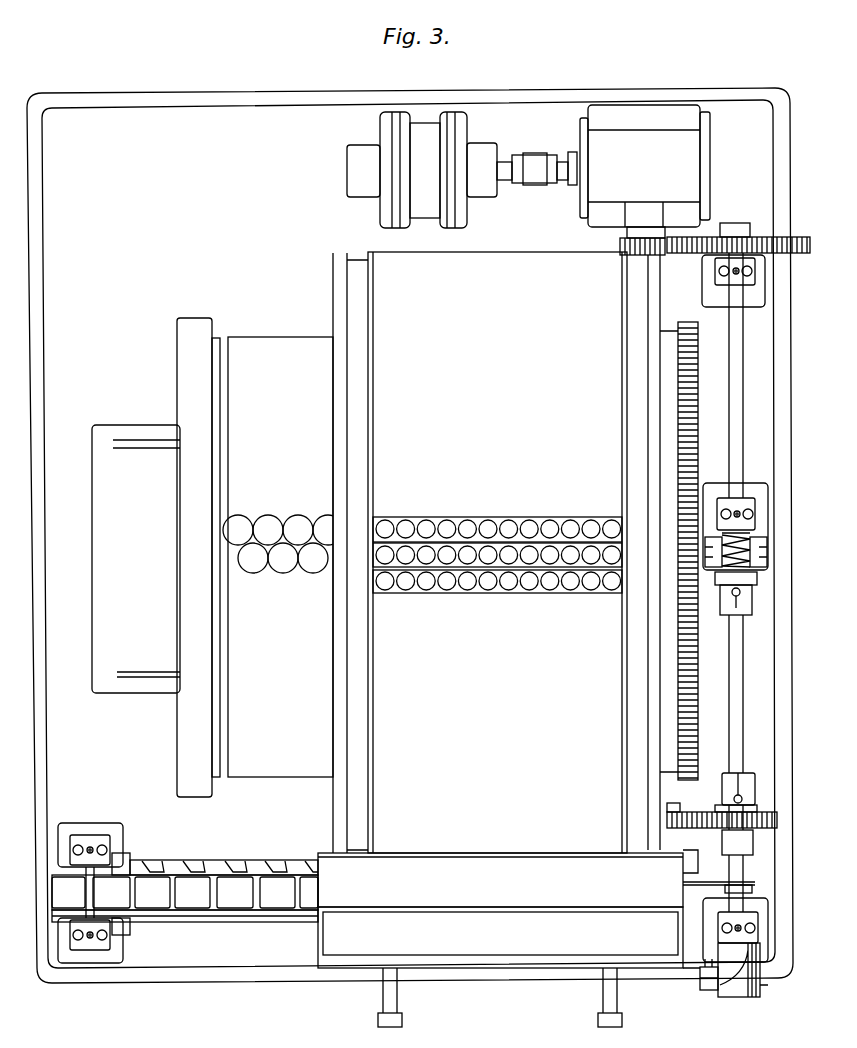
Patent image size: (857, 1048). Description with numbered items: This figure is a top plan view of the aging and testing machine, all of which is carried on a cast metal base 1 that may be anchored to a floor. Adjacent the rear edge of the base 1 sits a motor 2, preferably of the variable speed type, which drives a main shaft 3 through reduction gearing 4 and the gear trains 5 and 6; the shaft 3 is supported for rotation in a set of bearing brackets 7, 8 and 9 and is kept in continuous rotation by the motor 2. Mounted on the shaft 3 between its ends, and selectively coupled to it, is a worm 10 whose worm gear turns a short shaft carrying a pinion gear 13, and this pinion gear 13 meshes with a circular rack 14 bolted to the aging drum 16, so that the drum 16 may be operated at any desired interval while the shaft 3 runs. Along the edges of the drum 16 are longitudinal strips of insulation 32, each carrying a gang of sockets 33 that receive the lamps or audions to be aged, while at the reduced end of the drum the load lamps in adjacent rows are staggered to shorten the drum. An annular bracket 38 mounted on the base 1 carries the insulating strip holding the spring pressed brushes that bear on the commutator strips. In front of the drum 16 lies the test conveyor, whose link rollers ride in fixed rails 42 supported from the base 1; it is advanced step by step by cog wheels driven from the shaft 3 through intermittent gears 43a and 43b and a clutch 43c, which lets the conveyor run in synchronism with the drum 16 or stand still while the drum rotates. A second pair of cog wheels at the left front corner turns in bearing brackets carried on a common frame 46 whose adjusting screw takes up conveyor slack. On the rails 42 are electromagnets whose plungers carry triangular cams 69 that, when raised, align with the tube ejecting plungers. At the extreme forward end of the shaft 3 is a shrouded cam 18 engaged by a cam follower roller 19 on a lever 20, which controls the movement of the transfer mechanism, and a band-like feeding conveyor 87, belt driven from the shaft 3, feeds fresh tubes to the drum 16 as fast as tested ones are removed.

The base 1 is at (785, 110).
The motor 2 is at (385, 122).
The main shaft 3 is at (752, 404).
The reduction gearing 4 is at (688, 164).
The gear train 5 is at (620, 246).
The gear train 6 is at (800, 237).
The bearing bracket 7 is at (755, 283).
The bearing bracket 8 is at (758, 507).
The bearing bracket 9 is at (758, 936).
The worm 10 is at (760, 548).
The pinion gear 13 is at (682, 588).
The circular rack 14 is at (675, 368).
The aging drum 16 is at (508, 579).
The shrouded cam 18 is at (762, 990).
The cam follower roller 19 is at (730, 998).
The lever 20 is at (712, 992).
The strip of insulation 32 is at (545, 514).
The sockets 33 is at (596, 520).
The annular bracket 38 is at (185, 760).
The rails 42 is at (252, 922).
The intermittent gear 43a is at (770, 812).
The intermittent gear 43b is at (670, 810).
The clutch 43c is at (756, 785).
The common frame 46 is at (118, 958).
The triangular shaped cam 69 is at (262, 858).
The feeding conveyor 87 is at (522, 970).